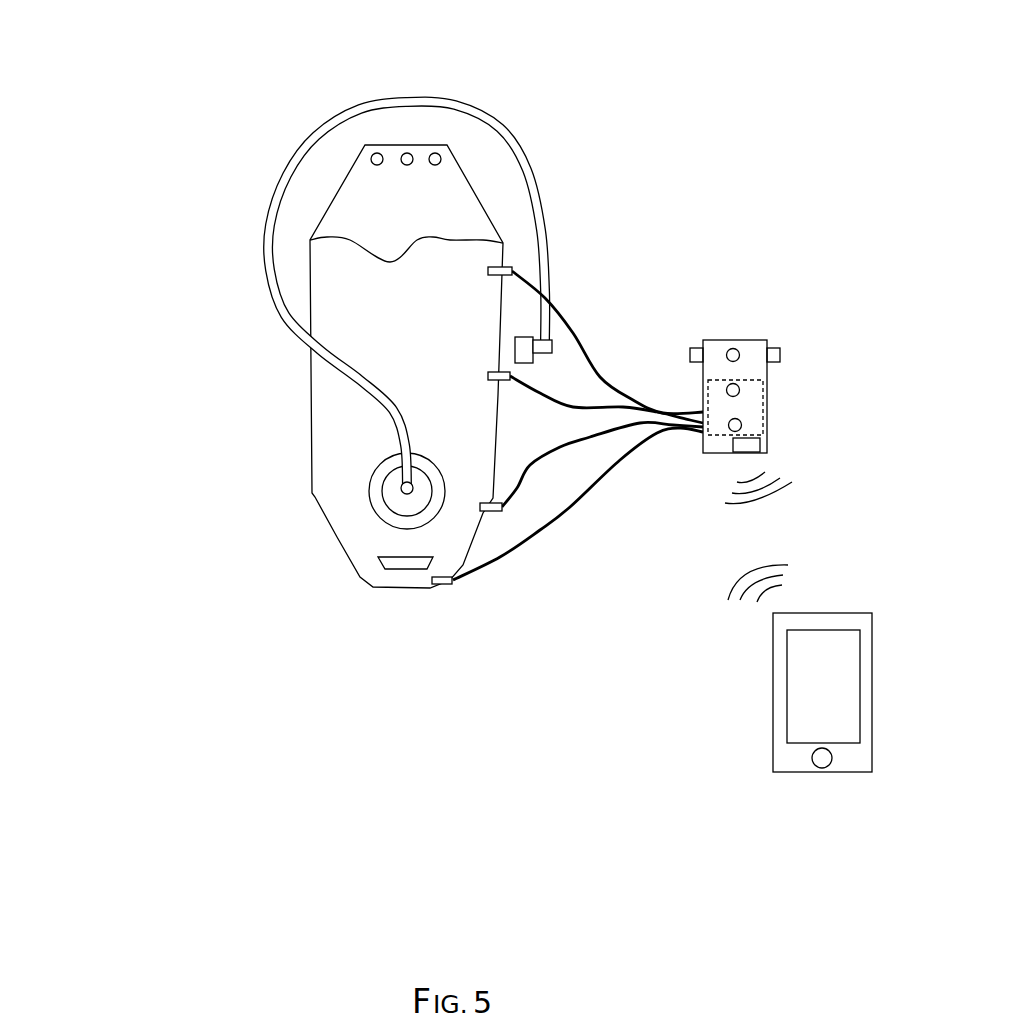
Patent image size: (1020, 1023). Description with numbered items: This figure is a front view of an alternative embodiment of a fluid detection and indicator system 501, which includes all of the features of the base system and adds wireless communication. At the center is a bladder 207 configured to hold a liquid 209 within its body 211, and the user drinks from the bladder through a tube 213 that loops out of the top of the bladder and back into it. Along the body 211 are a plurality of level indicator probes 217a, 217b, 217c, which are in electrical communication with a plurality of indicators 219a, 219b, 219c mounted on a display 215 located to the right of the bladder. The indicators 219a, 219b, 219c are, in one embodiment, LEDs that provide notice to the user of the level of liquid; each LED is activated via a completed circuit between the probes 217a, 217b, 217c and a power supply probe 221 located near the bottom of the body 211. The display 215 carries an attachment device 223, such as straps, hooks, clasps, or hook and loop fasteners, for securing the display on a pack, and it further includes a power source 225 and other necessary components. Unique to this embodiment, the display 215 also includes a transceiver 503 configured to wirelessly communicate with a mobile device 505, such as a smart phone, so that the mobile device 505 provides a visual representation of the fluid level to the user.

The fluid detection and indicator system 501 is at (153, 64).
The bladder 207 is at (653, 78).
The liquid 209 is at (450, 237).
The body 211 is at (312, 457).
The tube 213 is at (267, 202).
The display 215 is at (737, 423).
The level indicator probe 217a is at (488, 271).
The level indicator probe 217b is at (488, 376).
The level indicator probe 217c is at (482, 503).
The indicator 219a is at (732, 348).
The indicator 219b is at (731, 397).
The indicator 219c is at (733, 431).
The power supply probe 221 is at (447, 585).
The attachment device 223 is at (780, 360).
The power source 225 is at (763, 385).
The transceiver 503 is at (760, 443).
The mobile device 505 is at (773, 687).